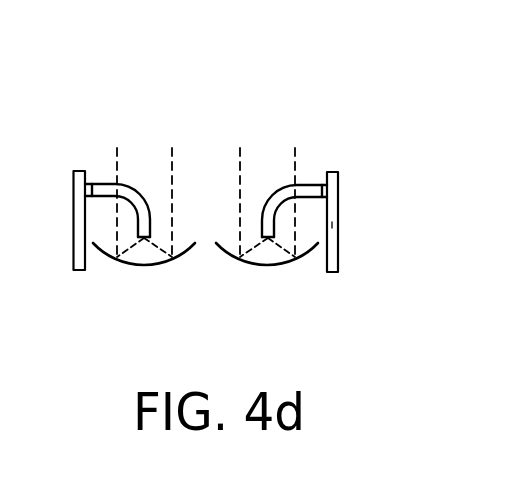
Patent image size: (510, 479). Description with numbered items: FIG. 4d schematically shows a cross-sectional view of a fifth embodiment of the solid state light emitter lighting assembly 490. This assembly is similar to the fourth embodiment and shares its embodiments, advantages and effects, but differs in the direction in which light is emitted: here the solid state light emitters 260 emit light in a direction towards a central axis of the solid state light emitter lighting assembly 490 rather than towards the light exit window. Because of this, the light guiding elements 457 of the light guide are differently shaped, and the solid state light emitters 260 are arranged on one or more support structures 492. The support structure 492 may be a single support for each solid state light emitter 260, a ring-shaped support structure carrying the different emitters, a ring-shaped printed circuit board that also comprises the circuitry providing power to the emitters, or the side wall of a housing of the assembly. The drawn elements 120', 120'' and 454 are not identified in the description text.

The solid state light emitter lighting assembly 490 is at (100, 72).
The first reflector / light source unit 120' is at (144, 290).
The second reflector / light source unit 120'' is at (267, 290).
The curved light guide tube 454 is at (268, 238).
The light guiding element 457 is at (313, 186).
The solid state light emitter 260 is at (338, 190).
The support structure 492 is at (332, 225).